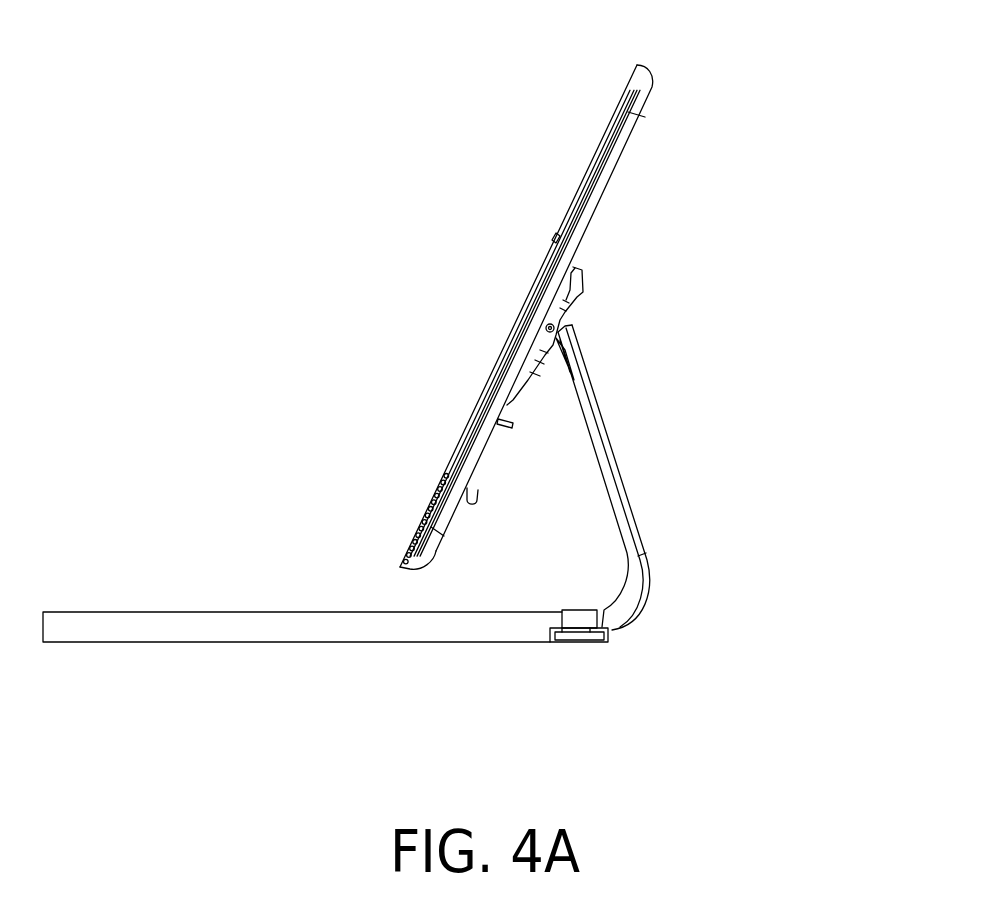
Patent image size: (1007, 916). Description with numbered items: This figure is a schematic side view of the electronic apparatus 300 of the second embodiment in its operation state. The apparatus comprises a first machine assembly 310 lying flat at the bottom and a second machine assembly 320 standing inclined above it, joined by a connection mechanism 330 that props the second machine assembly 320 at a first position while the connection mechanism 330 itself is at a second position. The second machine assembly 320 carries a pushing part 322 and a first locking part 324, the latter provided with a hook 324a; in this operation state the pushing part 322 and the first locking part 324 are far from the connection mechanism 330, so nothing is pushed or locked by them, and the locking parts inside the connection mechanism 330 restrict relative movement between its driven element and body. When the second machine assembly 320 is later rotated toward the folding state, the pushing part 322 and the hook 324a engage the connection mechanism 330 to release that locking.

The electronic apparatus 300 is at (805, 620).
The first machine assembly 310 is at (363, 636).
The second machine assembly 320 is at (637, 97).
The pushing part 322 is at (497, 423).
The first locking part 324 is at (477, 507).
The hook 324a is at (442, 473).
The connection mechanism 330 is at (615, 400).